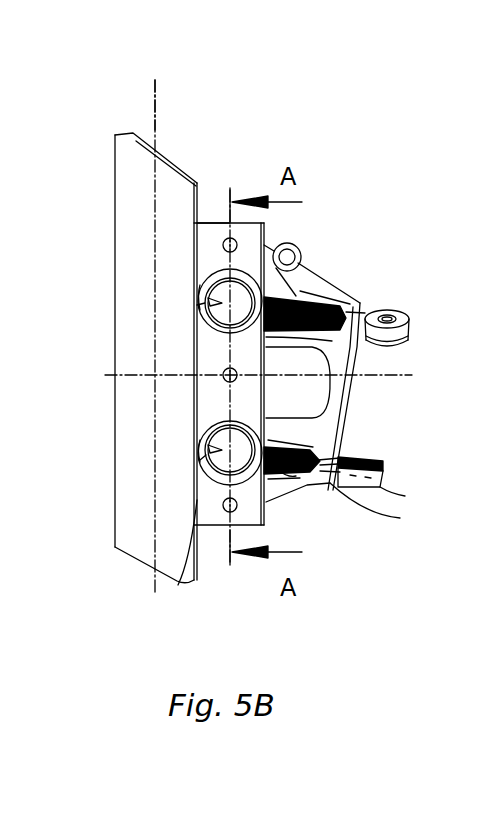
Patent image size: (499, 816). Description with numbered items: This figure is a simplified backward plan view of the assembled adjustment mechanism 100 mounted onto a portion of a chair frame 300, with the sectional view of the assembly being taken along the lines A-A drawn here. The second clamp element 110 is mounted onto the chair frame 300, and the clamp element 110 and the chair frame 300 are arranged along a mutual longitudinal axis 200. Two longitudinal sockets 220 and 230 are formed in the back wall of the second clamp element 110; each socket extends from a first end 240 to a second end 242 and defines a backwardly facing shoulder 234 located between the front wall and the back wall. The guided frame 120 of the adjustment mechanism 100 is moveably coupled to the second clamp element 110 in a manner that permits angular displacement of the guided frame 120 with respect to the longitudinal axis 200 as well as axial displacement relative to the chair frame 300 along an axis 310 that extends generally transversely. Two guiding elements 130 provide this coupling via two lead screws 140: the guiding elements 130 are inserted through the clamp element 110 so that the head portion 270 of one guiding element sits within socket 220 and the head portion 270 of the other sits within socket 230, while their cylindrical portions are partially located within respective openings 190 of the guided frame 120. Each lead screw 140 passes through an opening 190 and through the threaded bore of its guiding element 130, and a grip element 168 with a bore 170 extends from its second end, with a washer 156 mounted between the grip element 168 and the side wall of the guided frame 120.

The adjustment mechanism 100 is at (320, 140).
The second clamp element 110 is at (206, 224).
The guided frame 120 is at (322, 405).
The guiding element 130 is at (197, 285).
The lead screw 140 is at (330, 300).
The washer 156 is at (365, 307).
The grip element 168 is at (403, 340).
The bore 170 is at (392, 320).
The opening 190 is at (303, 266).
The longitudinal axis 200 is at (157, 108).
The socket 220 is at (188, 563).
The socket 230 is at (216, 222).
The backwardly facing shoulder 234 is at (238, 270).
The first end 240 is at (197, 338).
The second end 242 is at (204, 424).
The head portion 270 is at (197, 305).
The chair frame 300 is at (134, 181).
The axis 310 is at (412, 376).